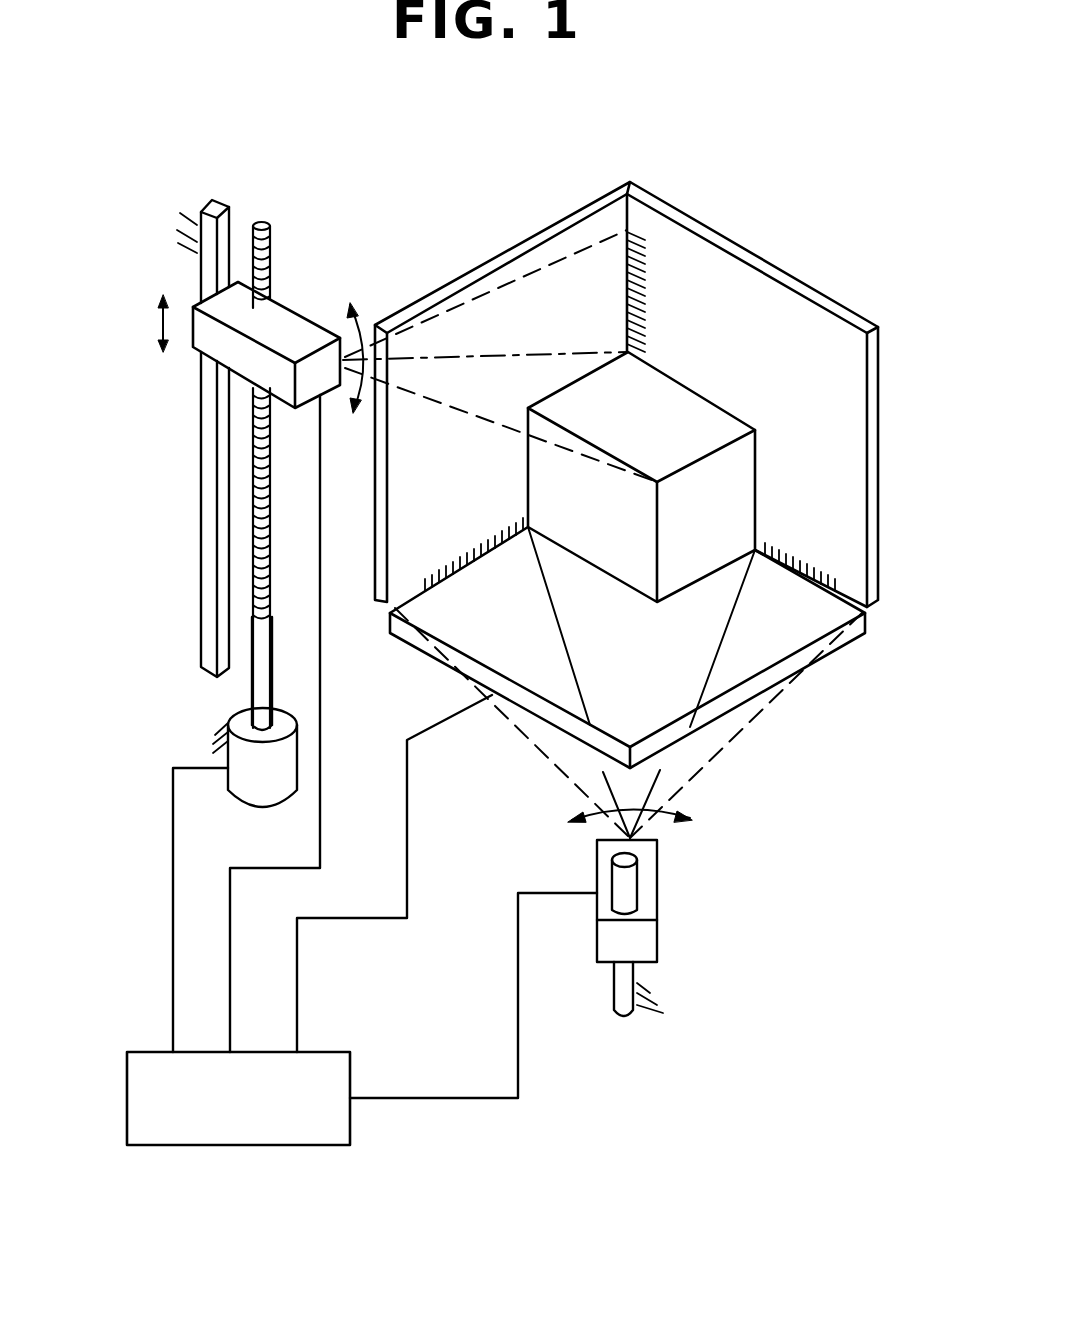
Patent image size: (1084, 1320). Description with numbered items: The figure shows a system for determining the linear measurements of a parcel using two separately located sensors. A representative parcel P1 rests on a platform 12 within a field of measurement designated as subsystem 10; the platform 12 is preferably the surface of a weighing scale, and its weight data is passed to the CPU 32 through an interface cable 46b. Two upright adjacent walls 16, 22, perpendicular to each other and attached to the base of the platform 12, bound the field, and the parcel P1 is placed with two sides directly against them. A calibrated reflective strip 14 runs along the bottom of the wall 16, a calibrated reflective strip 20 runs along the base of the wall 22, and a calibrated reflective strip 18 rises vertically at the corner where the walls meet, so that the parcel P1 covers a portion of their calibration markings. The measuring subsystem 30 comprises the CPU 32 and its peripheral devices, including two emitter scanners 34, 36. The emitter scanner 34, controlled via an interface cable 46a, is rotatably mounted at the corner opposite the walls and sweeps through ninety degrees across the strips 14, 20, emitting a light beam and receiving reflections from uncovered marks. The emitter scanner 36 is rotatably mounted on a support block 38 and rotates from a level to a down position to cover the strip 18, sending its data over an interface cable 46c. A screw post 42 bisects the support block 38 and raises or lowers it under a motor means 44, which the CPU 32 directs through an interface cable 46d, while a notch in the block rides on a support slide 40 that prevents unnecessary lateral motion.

The field of measurement subsystem 10 is at (897, 388).
The platform 12 is at (832, 622).
The calibrated reflective strip 14 is at (830, 558).
The upright wall 16 is at (852, 447).
The calibrated reflective strip 18 is at (648, 255).
The calibrated reflective strip 20 is at (487, 530).
The upright wall 22 is at (573, 235).
The representative parcel P1 is at (673, 410).
The subsystem 30 is at (178, 725).
The CPU 32 is at (267, 1133).
The emitter scanner 34 is at (647, 938).
The emitter scanner 36 is at (315, 337).
The support block 38 is at (207, 342).
The support slide 40 is at (210, 440).
The screw post 42 is at (267, 262).
The motor means 44 is at (263, 788).
The interface cable 46a is at (460, 1098).
The interface cable 46b is at (342, 920).
The interface cable 46c is at (313, 872).
The interface cable 46d is at (177, 977).